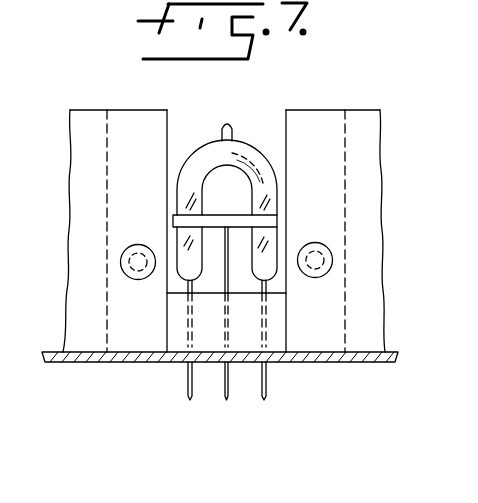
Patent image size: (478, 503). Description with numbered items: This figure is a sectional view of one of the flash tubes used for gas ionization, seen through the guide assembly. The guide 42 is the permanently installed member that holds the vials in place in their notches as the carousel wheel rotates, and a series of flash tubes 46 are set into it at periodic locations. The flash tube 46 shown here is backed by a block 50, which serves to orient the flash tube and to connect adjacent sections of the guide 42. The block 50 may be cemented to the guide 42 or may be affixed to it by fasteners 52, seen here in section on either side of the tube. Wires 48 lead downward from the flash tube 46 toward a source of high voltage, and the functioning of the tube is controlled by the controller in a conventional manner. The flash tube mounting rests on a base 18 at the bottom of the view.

The printed circuit board 18 is at (50, 352).
The guide 42 is at (132, 118).
The flash tube 46 is at (208, 158).
The wires 48 is at (277, 404).
The block 50 is at (270, 125).
The fasteners 52 is at (133, 279).